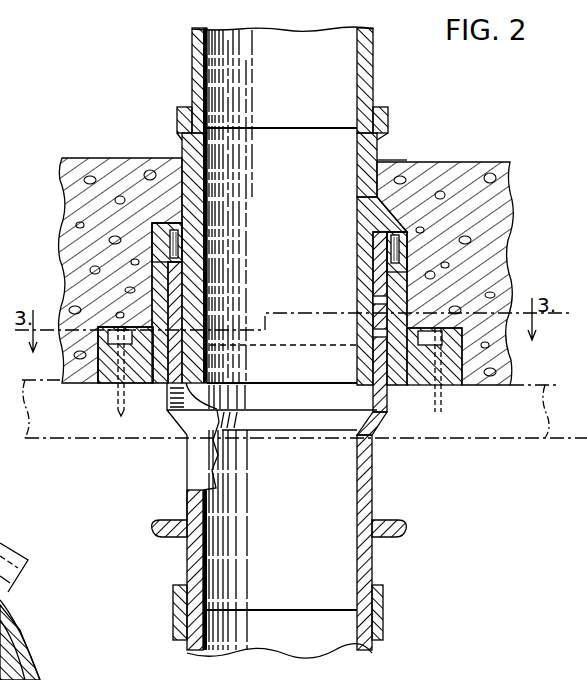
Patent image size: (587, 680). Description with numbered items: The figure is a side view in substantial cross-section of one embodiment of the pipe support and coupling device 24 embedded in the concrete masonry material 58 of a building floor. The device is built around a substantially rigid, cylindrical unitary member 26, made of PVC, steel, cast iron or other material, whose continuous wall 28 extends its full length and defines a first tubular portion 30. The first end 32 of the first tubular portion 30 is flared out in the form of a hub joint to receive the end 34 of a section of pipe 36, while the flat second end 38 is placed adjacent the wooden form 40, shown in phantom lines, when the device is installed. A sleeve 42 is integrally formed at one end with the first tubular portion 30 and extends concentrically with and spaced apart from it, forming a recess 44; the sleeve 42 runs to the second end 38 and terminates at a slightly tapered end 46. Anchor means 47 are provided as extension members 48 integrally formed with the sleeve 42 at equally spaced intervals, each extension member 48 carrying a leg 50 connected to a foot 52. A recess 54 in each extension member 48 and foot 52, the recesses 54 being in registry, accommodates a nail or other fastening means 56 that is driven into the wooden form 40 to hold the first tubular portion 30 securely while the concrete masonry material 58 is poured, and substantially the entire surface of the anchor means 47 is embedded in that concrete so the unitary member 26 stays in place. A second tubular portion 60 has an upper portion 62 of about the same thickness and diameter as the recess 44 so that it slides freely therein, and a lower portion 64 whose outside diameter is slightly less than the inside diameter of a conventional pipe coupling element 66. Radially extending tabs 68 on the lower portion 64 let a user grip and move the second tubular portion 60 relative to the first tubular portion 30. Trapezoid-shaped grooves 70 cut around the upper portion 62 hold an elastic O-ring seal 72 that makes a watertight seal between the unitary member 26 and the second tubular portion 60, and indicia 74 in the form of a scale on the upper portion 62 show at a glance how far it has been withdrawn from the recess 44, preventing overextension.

The pipe support and coupling device 24 is at (387, 158).
The unitary member 26 is at (358, 152).
The continuous wall 28 is at (365, 183).
The first tubular portion 30 is at (208, 250).
The first end 32 is at (177, 118).
The end of pipe section 34 is at (183, 140).
The section of pipe 36 is at (192, 68).
The second end 38 is at (378, 372).
The wooden form 40 is at (80, 420).
The sleeve 42 is at (380, 270).
The recess 44 is at (385, 240).
The end of sleeve 46 is at (388, 386).
The anchor means 47 is at (148, 300).
The extension member 48 is at (105, 318).
The leg 50 is at (100, 370).
The foot 52 is at (127, 398).
The recess 54 is at (208, 345).
The fastening means 56 is at (445, 387).
The concrete masonry material 58 is at (93, 158).
The second tubular portion 60 is at (373, 468).
The upper portion 62 is at (378, 333).
The lower portion 64 is at (365, 580).
The pipe coupling element 66 is at (383, 603).
The tabs 68 is at (165, 520).
The grooves 70 is at (208, 277).
The O-ring seal 72 is at (375, 300).
The indicia 74 is at (168, 418).